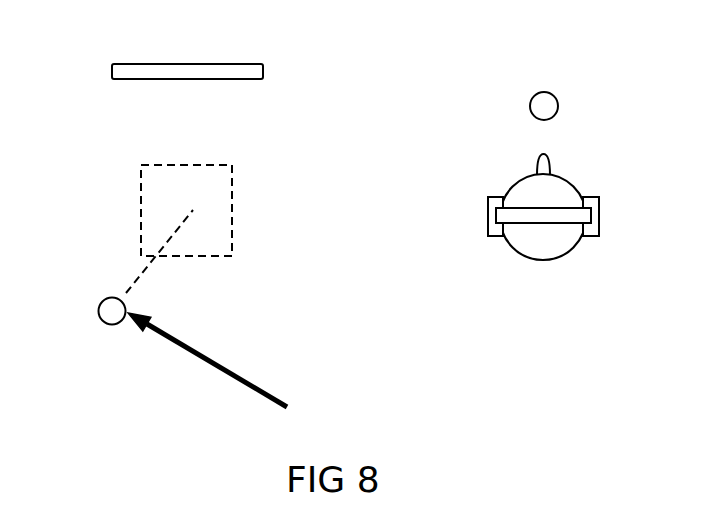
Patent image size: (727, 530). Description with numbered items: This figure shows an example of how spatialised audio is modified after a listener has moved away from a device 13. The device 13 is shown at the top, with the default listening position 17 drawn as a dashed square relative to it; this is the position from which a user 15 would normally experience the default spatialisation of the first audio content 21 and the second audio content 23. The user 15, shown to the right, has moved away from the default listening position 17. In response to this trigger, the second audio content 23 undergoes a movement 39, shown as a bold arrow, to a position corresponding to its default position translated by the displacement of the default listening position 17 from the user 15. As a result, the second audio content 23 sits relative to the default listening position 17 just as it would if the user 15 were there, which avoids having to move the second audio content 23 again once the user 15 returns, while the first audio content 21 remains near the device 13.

The device 13 is at (158, 54).
The user 15 is at (588, 179).
The default listening position 17 is at (137, 202).
The first audio content 21 is at (566, 93).
The second audio content 23 is at (95, 315).
The movement 39 is at (250, 366).